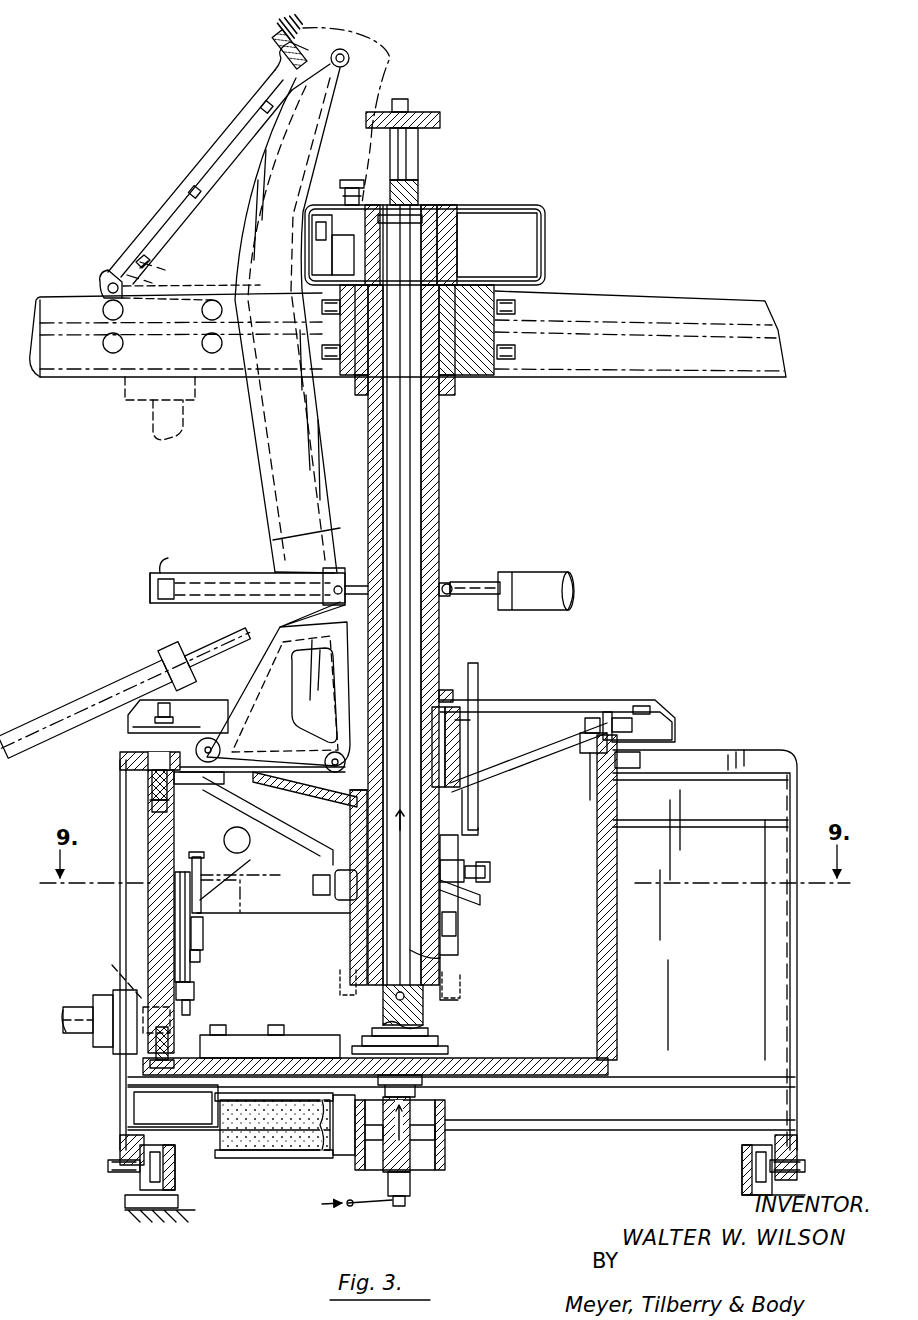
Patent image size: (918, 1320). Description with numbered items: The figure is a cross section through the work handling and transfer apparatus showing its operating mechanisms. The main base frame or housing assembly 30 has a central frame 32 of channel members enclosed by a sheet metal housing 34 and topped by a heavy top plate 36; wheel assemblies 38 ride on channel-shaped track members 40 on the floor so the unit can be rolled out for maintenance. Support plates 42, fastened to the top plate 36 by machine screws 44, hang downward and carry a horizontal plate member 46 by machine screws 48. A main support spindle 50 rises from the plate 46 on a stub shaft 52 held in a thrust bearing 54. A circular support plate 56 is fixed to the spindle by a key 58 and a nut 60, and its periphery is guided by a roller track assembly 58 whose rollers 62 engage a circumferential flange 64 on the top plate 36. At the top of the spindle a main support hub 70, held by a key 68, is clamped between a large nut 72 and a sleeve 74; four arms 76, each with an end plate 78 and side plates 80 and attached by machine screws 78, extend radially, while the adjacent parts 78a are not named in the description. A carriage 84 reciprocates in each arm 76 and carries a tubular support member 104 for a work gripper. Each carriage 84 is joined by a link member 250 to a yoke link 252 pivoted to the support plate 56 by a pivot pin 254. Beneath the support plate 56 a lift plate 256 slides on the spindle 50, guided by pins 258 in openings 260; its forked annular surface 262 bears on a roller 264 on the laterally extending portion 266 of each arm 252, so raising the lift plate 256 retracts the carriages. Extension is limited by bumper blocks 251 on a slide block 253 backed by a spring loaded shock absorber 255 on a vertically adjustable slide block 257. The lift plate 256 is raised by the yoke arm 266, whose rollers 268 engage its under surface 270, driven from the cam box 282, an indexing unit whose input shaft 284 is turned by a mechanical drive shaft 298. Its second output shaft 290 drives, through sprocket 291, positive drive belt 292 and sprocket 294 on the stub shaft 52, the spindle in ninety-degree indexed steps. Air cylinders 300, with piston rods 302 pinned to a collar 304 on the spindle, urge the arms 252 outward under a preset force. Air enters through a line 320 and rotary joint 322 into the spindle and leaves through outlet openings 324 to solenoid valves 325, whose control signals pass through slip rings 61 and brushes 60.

The main base frame or housing assembly 30 is at (802, 990).
The central frame 32 is at (690, 825).
The sheet metal housing 34 is at (118, 1080).
The top plate 36 is at (782, 750).
The wheel assemblies 38 is at (116, 1205).
The channel-shaped track members 40 is at (176, 1176).
The support plates 42 is at (176, 840).
The machine screws 44 is at (176, 792).
The plate member 46 is at (618, 1068).
The machine screws 48 is at (168, 1050).
The main support spindle 50 is at (440, 655).
The stub shaft 52 is at (425, 1025).
The thrust bearing 54 is at (440, 1048).
The circular support flange or plate member 56 is at (558, 710).
The roller track assembly 58 is at (438, 760).
The nut 60 is at (455, 695).
The slip rings 61 is at (677, 730).
The rollers 62 is at (585, 765).
The circumferential flange 64 is at (640, 765).
The key 68 is at (412, 385).
The main support hub 70 is at (470, 378).
The large nut 72 is at (450, 395).
The sleeve 74 is at (440, 252).
The arms 76 is at (98, 387).
The machine screws 78 is at (350, 377).
The clamp bolts 78a is at (322, 307).
The radially extending plates 80 is at (66, 372).
The carriage 84 is at (110, 262).
The tubular support members 104 is at (150, 412).
The link member 250 is at (228, 150).
The bumper blocks 251 is at (228, 872).
The yoke link 252 is at (262, 490).
The slide block 253 is at (205, 935).
The pivot pin 254 is at (338, 775).
The spring loaded shock absorber 255 is at (205, 950).
The lift plate 256 is at (453, 858).
The vertically adjustable slide block 257 is at (205, 970).
The pins 258 is at (478, 728).
The openings 260 is at (478, 752).
The annular surface 262 is at (273, 845).
The roller 264 is at (232, 718).
The yoke arm 266 is at (238, 696).
The rollers 268 is at (340, 895).
The under surface 270 is at (490, 874).
The cam box 282 is at (270, 1032).
The input shaft 284 is at (118, 965).
The second output shaft 290 is at (255, 1094).
The sprocket 291 is at (278, 1158).
The positive drive belt 292 is at (342, 1158).
The sprocket 294 is at (432, 1165).
The mechanical drive shaft 298 is at (70, 1010).
The air cylinders 300 is at (185, 603).
The piston rods 302 is at (348, 578).
The collar 304 is at (446, 600).
The line 320 is at (348, 1205).
The rotary joint 322 is at (410, 1195).
The outlet openings 324 is at (380, 265).
The solenoid valves 325 is at (352, 205).